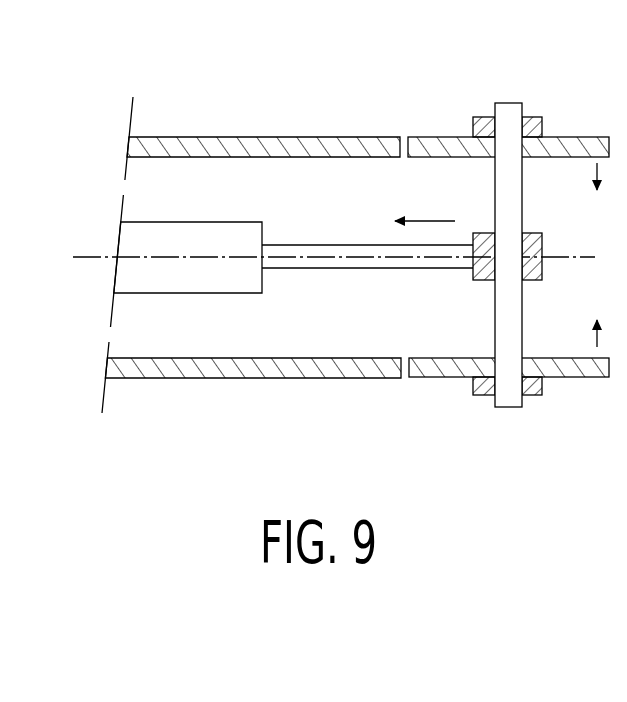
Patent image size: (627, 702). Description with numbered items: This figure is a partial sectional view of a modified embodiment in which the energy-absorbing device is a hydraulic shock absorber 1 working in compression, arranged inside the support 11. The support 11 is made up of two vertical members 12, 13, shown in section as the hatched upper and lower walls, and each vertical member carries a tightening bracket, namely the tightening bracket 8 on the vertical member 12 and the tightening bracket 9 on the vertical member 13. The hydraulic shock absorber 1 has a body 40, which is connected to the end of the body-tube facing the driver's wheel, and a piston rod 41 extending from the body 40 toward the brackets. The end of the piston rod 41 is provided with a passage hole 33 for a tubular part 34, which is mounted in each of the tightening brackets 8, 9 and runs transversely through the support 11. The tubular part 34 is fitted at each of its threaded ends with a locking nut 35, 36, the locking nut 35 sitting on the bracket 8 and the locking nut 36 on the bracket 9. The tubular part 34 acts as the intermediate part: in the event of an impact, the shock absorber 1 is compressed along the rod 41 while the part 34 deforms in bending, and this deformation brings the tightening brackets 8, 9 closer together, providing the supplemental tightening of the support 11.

The hydraulic shock absorber 1 is at (293, 302).
The tightening bracket 8 is at (575, 145).
The tightening bracket 9 is at (573, 370).
The support 11 is at (253, 233).
The vertical member 12 is at (187, 143).
The vertical member 13 is at (245, 365).
The passage hole 33 is at (477, 270).
The tubular part 34 is at (512, 197).
The locking nut 35 is at (478, 123).
The locking nut 36 is at (480, 393).
The body 40 is at (202, 245).
The piston rod 41 is at (342, 263).